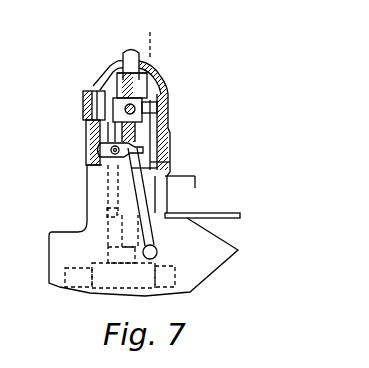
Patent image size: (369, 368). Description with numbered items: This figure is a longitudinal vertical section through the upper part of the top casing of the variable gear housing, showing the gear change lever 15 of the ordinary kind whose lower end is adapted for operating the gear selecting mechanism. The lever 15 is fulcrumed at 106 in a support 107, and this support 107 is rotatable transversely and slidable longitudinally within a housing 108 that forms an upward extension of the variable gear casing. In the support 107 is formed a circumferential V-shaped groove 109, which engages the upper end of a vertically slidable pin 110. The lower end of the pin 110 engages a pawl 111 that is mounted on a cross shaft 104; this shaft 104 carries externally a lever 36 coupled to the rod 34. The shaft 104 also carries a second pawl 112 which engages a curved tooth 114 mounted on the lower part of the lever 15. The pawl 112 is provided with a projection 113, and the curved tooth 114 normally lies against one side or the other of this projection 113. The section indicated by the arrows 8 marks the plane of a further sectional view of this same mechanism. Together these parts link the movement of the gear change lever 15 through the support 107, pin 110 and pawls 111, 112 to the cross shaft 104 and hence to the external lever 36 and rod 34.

The section line 8 is at (138, 31).
The gear change lever 15 is at (128, 63).
The rod 34 is at (217, 213).
The lever 36 is at (84, 214).
The cross shaft 104 is at (130, 147).
The fulcrum 106 is at (100, 86).
The support 107 is at (163, 85).
The housing 108 is at (163, 130).
The circumferential V-shaped groove 109 is at (100, 106).
The vertically slidable pin 110 is at (110, 127).
The pawl 111 is at (100, 151).
The pawl 112 is at (160, 143).
The projection 113 is at (128, 172).
The curved tooth 114 is at (170, 162).